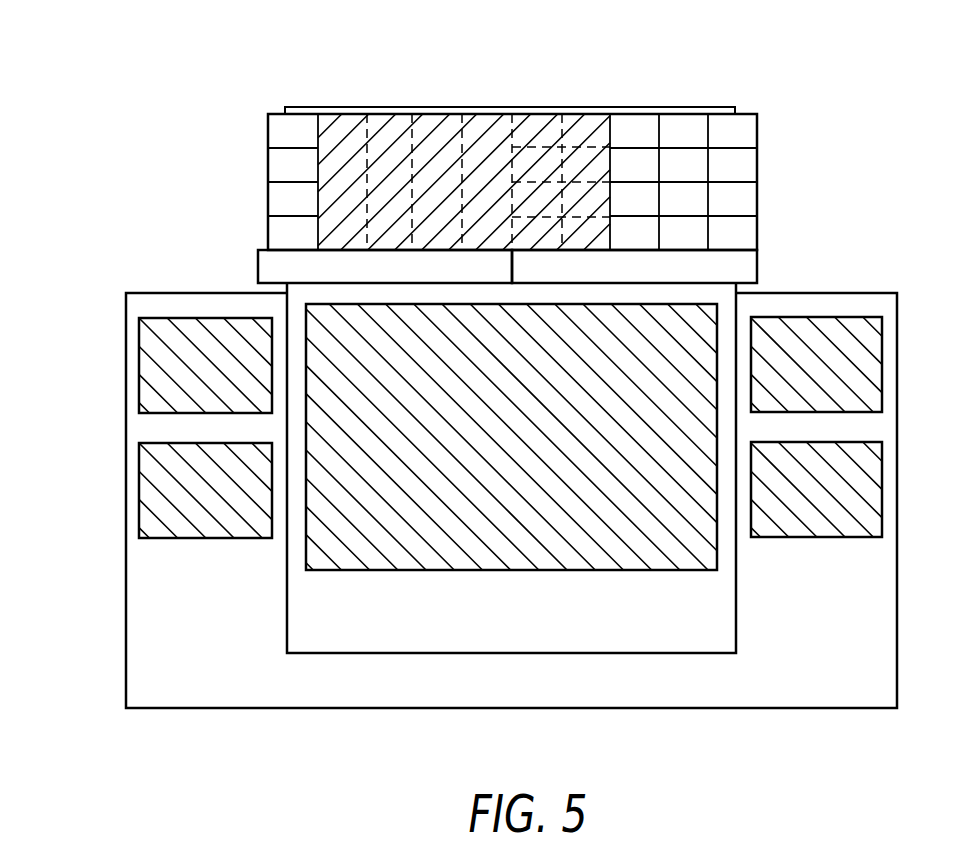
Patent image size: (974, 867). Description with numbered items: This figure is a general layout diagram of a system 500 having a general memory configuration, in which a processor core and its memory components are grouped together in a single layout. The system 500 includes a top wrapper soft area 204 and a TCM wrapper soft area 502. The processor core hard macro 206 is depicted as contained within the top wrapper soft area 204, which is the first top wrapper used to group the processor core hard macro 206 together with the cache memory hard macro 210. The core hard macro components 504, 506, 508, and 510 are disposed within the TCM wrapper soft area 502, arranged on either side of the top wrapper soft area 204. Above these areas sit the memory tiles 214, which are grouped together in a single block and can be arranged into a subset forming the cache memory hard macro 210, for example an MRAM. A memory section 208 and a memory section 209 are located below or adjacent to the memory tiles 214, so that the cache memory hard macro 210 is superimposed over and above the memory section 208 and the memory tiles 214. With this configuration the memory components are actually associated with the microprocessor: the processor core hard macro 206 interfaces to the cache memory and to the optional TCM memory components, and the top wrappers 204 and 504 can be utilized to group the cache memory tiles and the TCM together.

The system 500 is at (750, 71).
The TCM wrapper soft area 502 is at (837, 603).
The core hard macro component 504 is at (835, 365).
The core hard macro component 506 is at (835, 487).
The core hard macro component 508 is at (195, 362).
The core hard macro component 510 is at (195, 486).
The top wrapper soft area 204 is at (628, 622).
The processor core hard macro 206 is at (546, 505).
The memory section 208 is at (735, 268).
The memory section 209 is at (283, 270).
The cache memory hard macro 210 is at (428, 138).
The memory tiles 214 is at (758, 163).